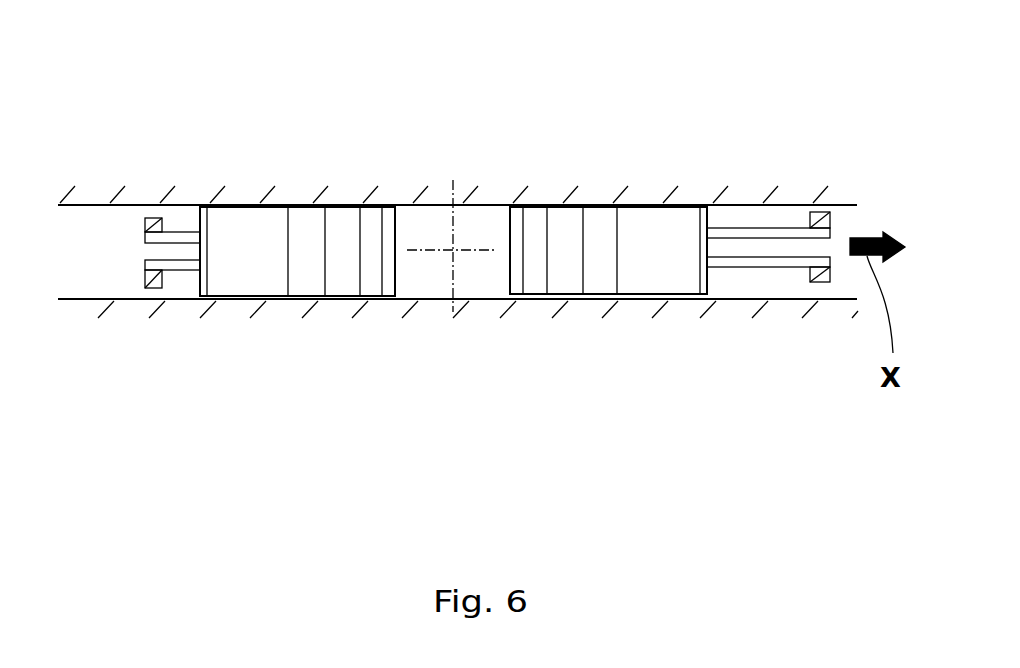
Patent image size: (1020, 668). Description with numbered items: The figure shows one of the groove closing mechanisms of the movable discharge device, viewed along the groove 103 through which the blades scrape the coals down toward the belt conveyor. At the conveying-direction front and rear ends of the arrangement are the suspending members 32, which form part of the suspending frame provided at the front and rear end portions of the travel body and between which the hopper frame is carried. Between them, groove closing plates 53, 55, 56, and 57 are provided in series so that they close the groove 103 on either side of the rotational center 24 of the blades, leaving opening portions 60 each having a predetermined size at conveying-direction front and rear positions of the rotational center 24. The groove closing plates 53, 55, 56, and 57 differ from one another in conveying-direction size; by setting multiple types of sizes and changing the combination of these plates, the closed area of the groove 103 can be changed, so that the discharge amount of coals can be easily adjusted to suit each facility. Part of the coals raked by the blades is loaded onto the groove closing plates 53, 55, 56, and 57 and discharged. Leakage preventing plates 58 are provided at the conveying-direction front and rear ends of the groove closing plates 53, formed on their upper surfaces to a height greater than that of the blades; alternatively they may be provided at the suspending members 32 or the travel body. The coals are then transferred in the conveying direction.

The rotational center 24 is at (455, 248).
The suspending member 32 is at (160, 217).
The groove closing plate 53 is at (242, 232).
The groove closing plate 55 is at (343, 232).
The groove closing plate 56 is at (371, 232).
The groove closing plate 57 is at (391, 232).
The leakage preventing plate 58 is at (700, 225).
The opening portion 60 is at (425, 262).
The groove 103 is at (752, 207).